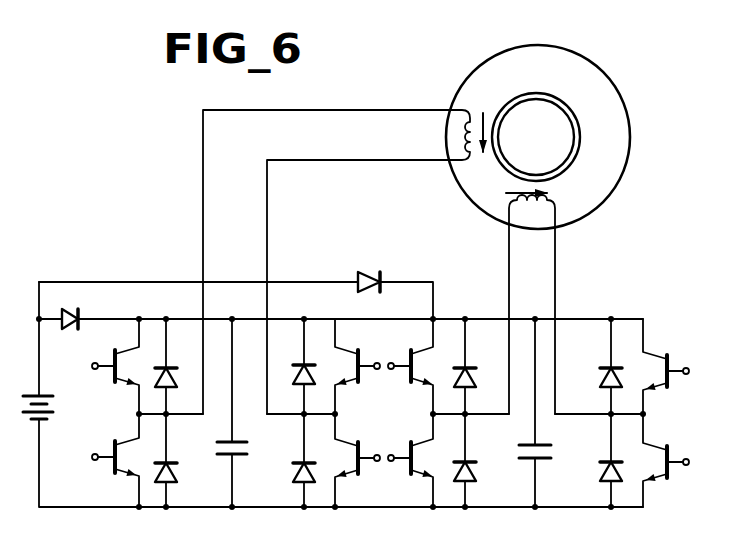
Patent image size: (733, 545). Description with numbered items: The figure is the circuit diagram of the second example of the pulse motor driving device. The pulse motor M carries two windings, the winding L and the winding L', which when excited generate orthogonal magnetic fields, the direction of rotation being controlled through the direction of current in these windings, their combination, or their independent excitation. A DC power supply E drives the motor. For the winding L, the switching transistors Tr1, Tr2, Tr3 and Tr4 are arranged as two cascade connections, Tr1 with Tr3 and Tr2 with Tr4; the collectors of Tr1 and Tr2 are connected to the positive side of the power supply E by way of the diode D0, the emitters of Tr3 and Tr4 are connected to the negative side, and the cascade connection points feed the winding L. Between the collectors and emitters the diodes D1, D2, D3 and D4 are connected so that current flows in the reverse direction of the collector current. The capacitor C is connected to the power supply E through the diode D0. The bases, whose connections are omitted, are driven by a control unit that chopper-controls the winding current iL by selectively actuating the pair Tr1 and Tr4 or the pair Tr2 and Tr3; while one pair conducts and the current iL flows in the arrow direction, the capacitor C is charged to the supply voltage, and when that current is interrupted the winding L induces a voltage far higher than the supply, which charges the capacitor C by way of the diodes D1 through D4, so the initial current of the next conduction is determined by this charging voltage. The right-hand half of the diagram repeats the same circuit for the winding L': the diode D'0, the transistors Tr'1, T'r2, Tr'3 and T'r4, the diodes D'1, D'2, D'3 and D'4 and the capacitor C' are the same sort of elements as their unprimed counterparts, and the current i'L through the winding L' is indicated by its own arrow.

The pulse motor M is at (615, 106).
The winding L is at (336, 262).
The winding L' is at (532, 304).
The winding current iL is at (483, 154).
The winding current i'L is at (542, 194).
The DC power supply E is at (30, 396).
The diode D0 is at (71, 305).
The diode D'0 is at (370, 272).
The diode D1 is at (173, 366).
The diode D2 is at (292, 366).
The diode D3 is at (177, 460).
The diode D4 is at (293, 460).
The diode D'1 is at (473, 366).
The diode D'2 is at (597, 366).
The diode D'3 is at (475, 460).
The diode D'4 is at (599, 460).
The capacitor C is at (233, 413).
The capacitor C' is at (537, 413).
The switching transistor Tr1 is at (103, 374).
The switching transistor Tr2 is at (358, 354).
The switching transistor Tr3 is at (103, 449).
The switching transistor Tr4 is at (361, 472).
The switching transistor Tr'1 is at (404, 380).
The switching transistor Tr'3 is at (402, 447).
The switching transistor T'r2 is at (676, 361).
The switching transistor T'r4 is at (675, 454).